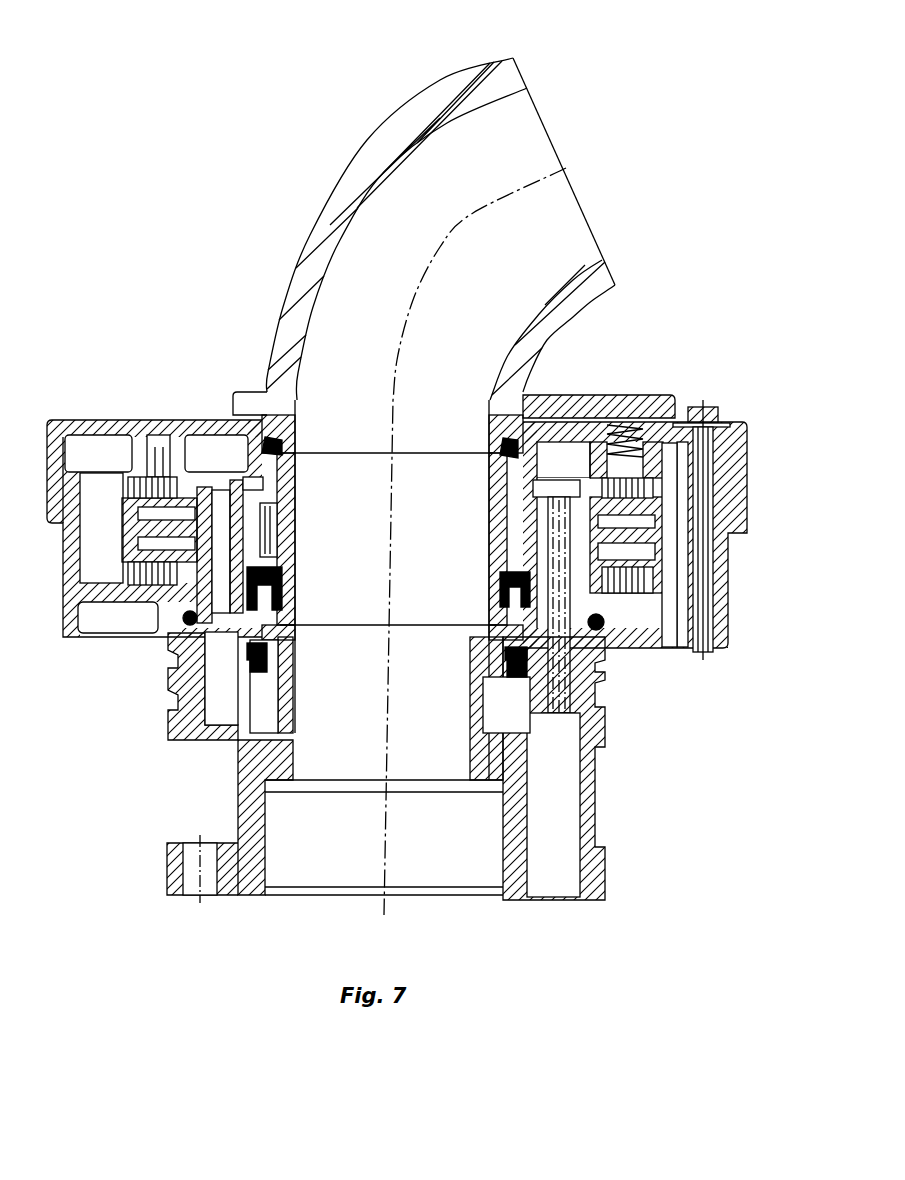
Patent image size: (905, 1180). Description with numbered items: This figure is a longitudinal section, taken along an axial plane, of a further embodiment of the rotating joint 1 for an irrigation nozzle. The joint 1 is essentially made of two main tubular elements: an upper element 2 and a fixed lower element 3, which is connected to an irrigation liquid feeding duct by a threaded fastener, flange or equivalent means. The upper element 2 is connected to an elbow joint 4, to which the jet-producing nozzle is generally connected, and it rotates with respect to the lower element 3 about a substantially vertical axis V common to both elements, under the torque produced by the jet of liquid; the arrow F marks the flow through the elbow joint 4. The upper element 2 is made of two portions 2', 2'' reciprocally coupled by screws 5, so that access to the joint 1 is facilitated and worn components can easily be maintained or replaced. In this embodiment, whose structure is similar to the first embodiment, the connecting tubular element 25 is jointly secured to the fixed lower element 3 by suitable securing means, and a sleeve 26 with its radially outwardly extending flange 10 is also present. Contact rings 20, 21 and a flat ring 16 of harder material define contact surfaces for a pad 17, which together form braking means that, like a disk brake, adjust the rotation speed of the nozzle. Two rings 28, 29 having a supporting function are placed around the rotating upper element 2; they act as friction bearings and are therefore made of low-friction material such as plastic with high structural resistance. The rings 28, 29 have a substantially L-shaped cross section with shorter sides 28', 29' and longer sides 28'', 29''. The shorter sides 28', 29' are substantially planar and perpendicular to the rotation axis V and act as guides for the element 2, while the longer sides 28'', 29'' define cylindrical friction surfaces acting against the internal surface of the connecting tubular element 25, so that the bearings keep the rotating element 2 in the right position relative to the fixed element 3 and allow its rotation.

The rotating joint 1 is at (688, 162).
The upper element 2 is at (649, 497).
The portion of upper element 2' is at (171, 488).
The portion of upper element 2'' is at (178, 669).
The lower element 3 is at (636, 828).
The elbow joint 4 is at (545, 333).
The screws 5 is at (710, 492).
The flange 10 is at (118, 541).
The flat ring 16 is at (660, 470).
The pad 17 is at (720, 630).
The contact ring 20 is at (647, 510).
The contact ring 21 is at (657, 567).
The connecting tubular element 25 is at (227, 473).
The sleeve 26 is at (172, 645).
The ring 28 is at (310, 460).
The shorter side of ring 28' is at (482, 433).
The longer side of ring 28'' is at (472, 520).
The ring 29 is at (305, 588).
The shorter side of ring 29' is at (468, 612).
The longer side of ring 29'' is at (473, 573).
The flow direction F is at (582, 164).
The vertical axis V is at (380, 813).